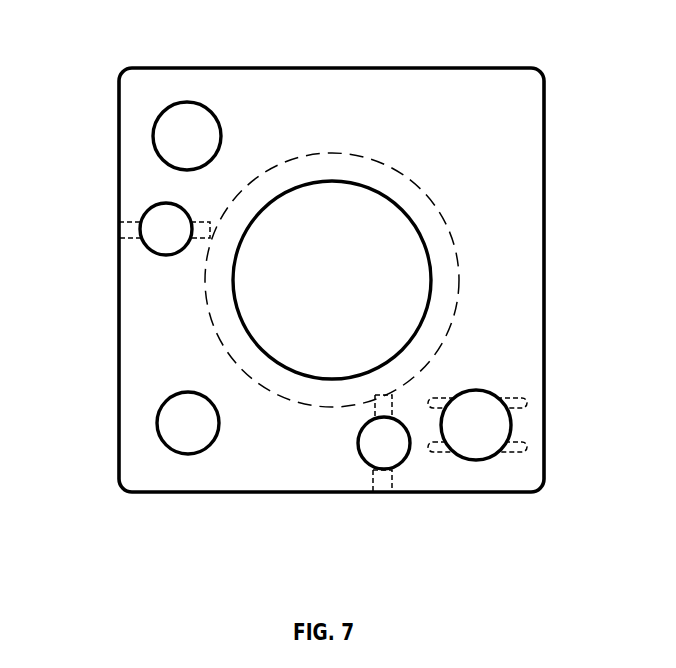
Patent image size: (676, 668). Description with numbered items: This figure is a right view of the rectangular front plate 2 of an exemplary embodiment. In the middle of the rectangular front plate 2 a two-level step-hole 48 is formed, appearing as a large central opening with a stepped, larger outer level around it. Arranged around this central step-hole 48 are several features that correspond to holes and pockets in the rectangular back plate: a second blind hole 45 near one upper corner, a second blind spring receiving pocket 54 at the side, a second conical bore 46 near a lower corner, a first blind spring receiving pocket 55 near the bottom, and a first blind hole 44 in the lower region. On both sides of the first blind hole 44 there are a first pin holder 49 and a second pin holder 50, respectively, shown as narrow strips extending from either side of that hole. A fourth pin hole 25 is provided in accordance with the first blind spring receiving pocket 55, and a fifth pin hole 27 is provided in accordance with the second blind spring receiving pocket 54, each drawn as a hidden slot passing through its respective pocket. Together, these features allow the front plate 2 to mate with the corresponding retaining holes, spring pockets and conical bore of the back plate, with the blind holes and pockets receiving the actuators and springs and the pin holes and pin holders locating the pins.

The rectangular front plate 2 is at (331, 248).
The fourth pin hole 25 is at (349, 492).
The fifth pin hole 27 is at (114, 175).
The first blind hole 44 is at (510, 481).
The second blind hole 45 is at (134, 89).
The second conical bore 46 is at (118, 464).
The 2-level step-hole 48 is at (299, 371).
The first pin holder 49 is at (533, 472).
The second pin holder 50 is at (533, 374).
The second blind spring receiving pocket 54 is at (99, 257).
The first blind spring receiving pocket 55 is at (419, 495).